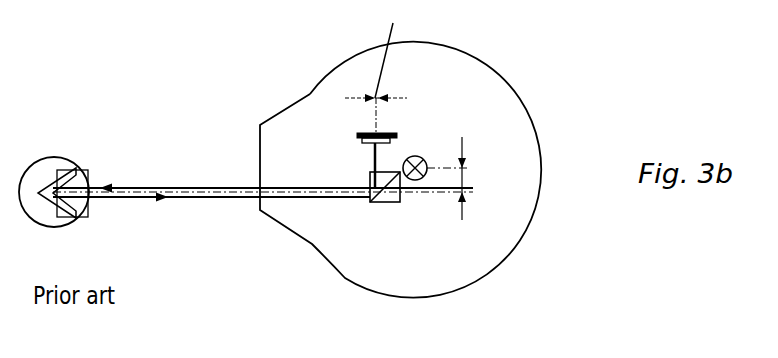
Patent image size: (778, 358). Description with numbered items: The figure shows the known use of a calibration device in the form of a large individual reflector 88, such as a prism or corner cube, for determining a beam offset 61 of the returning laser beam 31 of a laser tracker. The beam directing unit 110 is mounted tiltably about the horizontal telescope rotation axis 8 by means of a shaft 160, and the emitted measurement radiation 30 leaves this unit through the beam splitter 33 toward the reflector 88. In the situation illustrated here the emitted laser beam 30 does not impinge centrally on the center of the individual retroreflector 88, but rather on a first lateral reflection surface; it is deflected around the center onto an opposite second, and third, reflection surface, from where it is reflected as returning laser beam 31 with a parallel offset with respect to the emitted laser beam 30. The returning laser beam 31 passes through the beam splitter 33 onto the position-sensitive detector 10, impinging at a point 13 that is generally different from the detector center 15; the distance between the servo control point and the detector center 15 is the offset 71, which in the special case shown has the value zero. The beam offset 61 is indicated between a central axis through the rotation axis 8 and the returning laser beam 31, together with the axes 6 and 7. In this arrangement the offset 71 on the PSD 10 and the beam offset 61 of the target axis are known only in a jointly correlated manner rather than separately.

The beam directing unit 110 is at (290, 67).
The individual reflector 88 is at (85, 138).
The emitted measurement radiation 30 is at (178, 188).
The returning laser beam 31 is at (98, 198).
The beam splitter 33 is at (384, 200).
The impingement point 13 is at (373, 148).
The detector center 15 is at (358, 167).
The axis 7 is at (375, 118).
The offset 71 is at (393, 23).
The position-sensitive detector 10 is at (398, 125).
The telescope rotation axis 8 is at (423, 159).
The beam offset 61 is at (462, 177).
The axis 6 is at (473, 192).
The shaft 160 is at (418, 177).